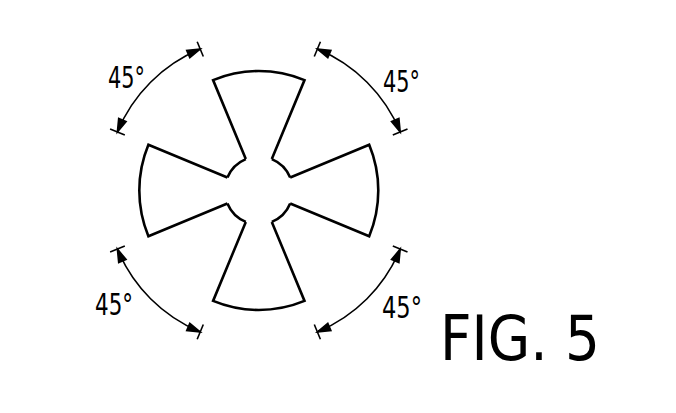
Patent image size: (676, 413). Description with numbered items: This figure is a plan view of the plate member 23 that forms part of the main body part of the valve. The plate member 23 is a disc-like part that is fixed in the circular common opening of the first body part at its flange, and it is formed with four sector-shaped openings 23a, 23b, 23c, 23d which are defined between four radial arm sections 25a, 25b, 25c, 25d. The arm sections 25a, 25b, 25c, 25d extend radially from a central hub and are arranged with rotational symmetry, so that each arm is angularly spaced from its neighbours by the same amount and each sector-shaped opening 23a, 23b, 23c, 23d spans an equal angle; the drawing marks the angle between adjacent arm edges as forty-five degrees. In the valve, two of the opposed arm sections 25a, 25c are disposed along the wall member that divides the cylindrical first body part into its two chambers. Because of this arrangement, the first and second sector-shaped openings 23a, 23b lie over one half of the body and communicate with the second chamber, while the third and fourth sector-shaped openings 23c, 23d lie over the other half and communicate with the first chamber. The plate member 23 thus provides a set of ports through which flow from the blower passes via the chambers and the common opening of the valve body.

The plate member 23 is at (255, 195).
The first sector-shaped opening 23a is at (343, 122).
The second sector-shaped opening 23b is at (353, 247).
The third sector-shaped opening 23c is at (203, 280).
The fourth sector-shaped opening 23d is at (170, 140).
The radial arm section 25a is at (255, 90).
The radial arm section 25b is at (367, 188).
The radial arm section 25c is at (267, 288).
The radial arm section 25d is at (158, 190).